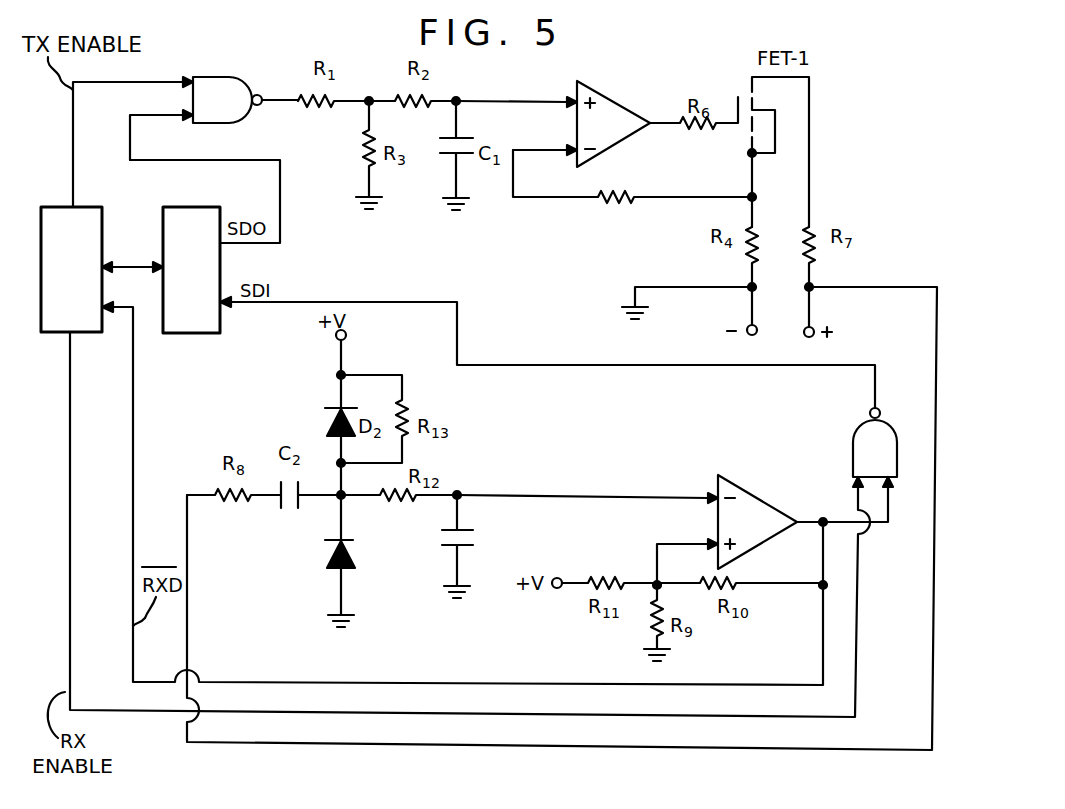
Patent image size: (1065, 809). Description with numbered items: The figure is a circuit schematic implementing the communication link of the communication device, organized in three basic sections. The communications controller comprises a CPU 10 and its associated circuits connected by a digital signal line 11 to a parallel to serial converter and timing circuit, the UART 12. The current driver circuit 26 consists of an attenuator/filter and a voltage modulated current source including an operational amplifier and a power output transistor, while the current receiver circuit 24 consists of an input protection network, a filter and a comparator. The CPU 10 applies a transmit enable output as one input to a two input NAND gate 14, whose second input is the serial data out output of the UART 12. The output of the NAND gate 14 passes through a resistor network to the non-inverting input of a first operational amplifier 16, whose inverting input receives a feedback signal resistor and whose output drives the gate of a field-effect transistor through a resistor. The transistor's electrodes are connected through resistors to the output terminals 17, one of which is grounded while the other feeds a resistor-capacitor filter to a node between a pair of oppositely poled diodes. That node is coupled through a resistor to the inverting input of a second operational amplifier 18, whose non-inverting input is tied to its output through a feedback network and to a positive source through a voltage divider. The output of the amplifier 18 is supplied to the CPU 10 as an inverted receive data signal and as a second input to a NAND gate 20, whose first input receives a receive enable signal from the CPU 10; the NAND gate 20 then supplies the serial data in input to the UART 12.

The CPU 10 is at (88, 207).
The digital signal line 11 is at (127, 267).
The universal asynchronous receiver transmitter (UART) 12 is at (222, 325).
The two input NAND gate 14 is at (215, 77).
The first operational amplifier 16 is at (614, 100).
The output terminals 17 is at (757, 330).
The second operational amplifier 18 is at (755, 497).
The NAND gate 20 is at (853, 440).
The current receiver circuit 24 is at (418, 658).
The current driver circuit 26 is at (540, 281).